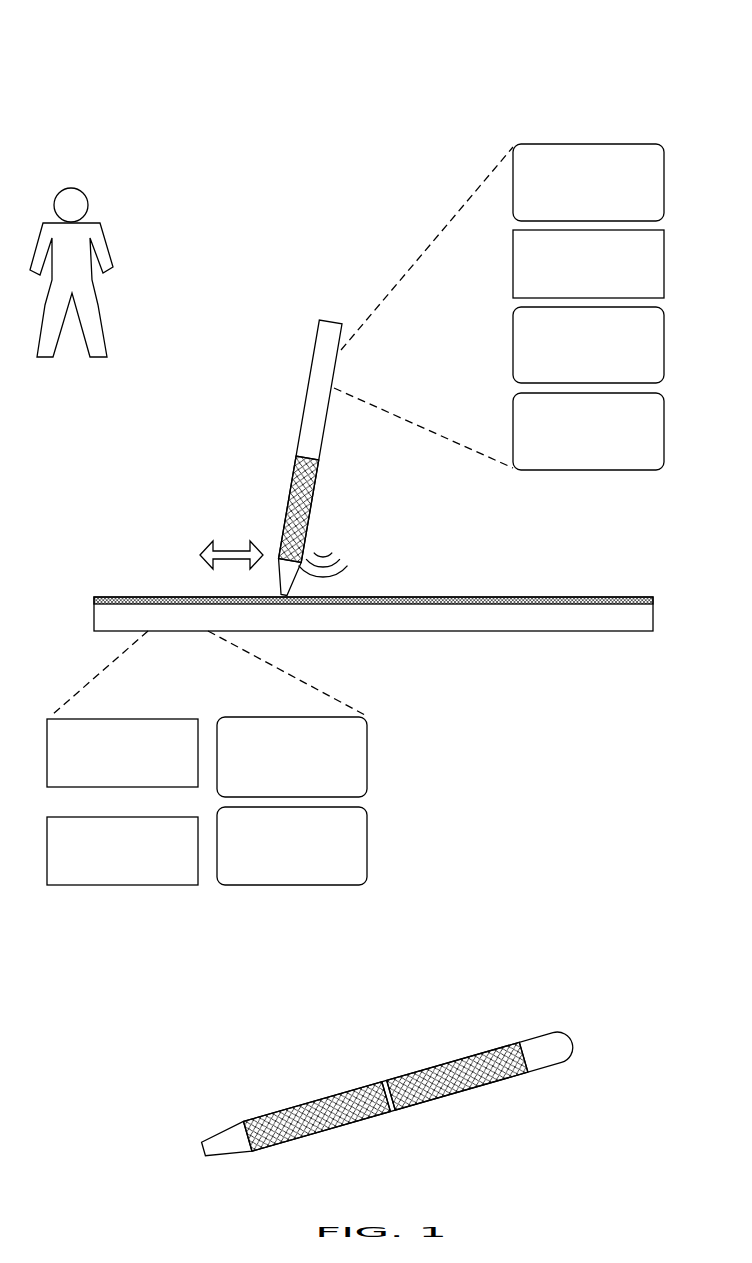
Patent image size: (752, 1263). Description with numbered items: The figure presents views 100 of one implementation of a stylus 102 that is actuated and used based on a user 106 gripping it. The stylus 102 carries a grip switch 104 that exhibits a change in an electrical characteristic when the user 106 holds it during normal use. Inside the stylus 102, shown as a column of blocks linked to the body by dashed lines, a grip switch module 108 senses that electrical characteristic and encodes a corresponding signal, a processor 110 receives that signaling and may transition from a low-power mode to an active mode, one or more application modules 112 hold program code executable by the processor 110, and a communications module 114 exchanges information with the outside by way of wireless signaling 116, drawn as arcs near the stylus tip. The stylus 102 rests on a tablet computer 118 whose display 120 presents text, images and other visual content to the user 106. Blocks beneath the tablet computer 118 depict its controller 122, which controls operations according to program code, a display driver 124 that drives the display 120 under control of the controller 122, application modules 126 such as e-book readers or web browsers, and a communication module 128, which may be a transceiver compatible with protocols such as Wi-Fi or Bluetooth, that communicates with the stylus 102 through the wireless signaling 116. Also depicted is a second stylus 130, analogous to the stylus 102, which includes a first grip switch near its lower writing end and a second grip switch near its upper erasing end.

The views 100 is at (632, 64).
The stylus 102 is at (302, 406).
The grip switch 104 is at (287, 505).
The user 106 is at (71, 295).
The grip switch module 108 is at (604, 216).
The processor 110 is at (604, 288).
The application modules 112 is at (604, 376).
The communications module 114 is at (604, 464).
The wireless signaling 116 is at (327, 543).
The tablet computer 118 is at (486, 631).
The display 120 is at (562, 598).
The controller 122 is at (138, 774).
The display driver 124 is at (138, 874).
The application modules 126 is at (308, 792).
The communication module 128 is at (308, 880).
The stylus 130 is at (547, 1030).